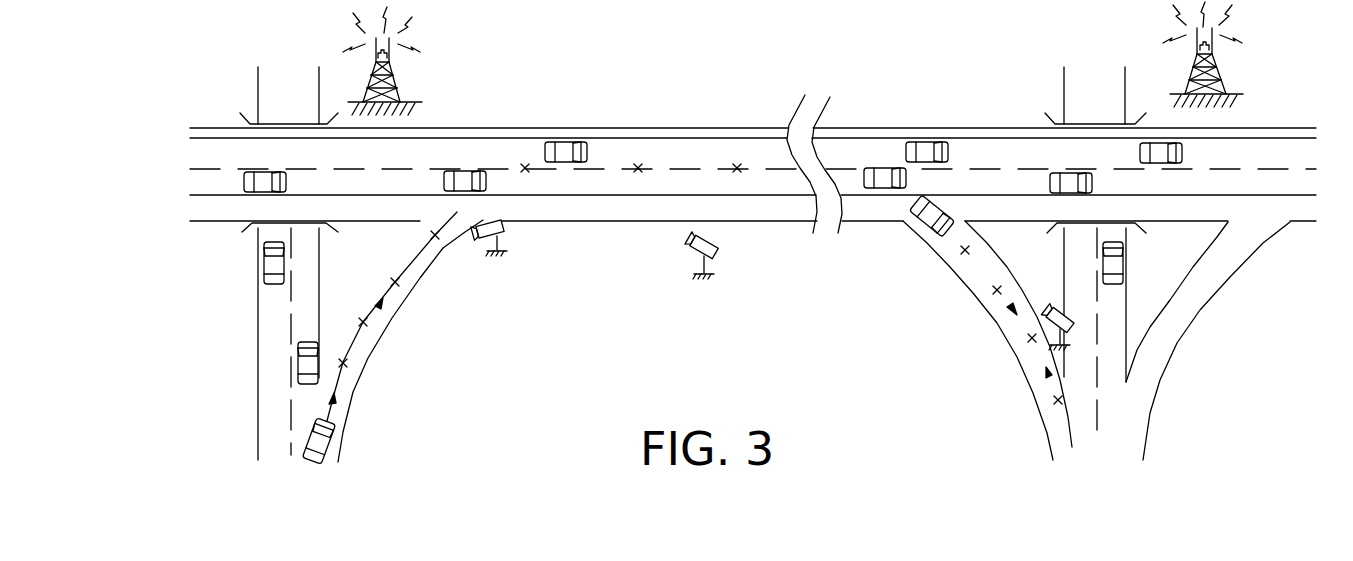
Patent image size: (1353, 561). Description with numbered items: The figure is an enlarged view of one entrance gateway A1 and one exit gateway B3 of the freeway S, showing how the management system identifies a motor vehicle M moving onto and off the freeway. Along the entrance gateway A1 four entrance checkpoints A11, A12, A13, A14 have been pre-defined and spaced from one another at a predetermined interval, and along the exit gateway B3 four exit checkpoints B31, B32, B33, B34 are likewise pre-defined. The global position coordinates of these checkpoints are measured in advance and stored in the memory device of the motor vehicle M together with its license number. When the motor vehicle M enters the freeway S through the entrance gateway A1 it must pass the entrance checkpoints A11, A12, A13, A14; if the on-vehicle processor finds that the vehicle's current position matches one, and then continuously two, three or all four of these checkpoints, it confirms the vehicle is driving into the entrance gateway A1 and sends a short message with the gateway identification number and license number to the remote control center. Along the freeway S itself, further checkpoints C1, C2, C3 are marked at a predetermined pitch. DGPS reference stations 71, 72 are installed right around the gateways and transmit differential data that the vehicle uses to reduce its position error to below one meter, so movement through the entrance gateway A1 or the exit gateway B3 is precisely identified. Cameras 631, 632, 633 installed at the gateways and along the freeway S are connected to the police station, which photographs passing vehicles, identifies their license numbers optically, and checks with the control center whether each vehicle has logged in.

The DGPS reference station 71 is at (396, 80).
The DGPS reference station 72 is at (1232, 82).
The camera 631 is at (500, 233).
The camera 632 is at (693, 240).
The camera 633 is at (1139, 374).
The freeway S is at (878, 124).
The checkpoint C1 is at (525, 164).
The checkpoint C2 is at (638, 164).
The checkpoint C3 is at (737, 164).
The entrance gateway A1 is at (427, 337).
The entrance checkpoint A11 is at (346, 366).
The entrance checkpoint A12 is at (366, 325).
The entrance checkpoint A13 is at (398, 285).
The entrance checkpoint A14 is at (438, 238).
The exit gateway B3 is at (965, 340).
The exit checkpoint B31 is at (960, 250).
The exit checkpoint B32 is at (992, 290).
The exit checkpoint B33 is at (1027, 338).
The exit checkpoint B34 is at (1053, 400).
The motor vehicle M is at (333, 438).